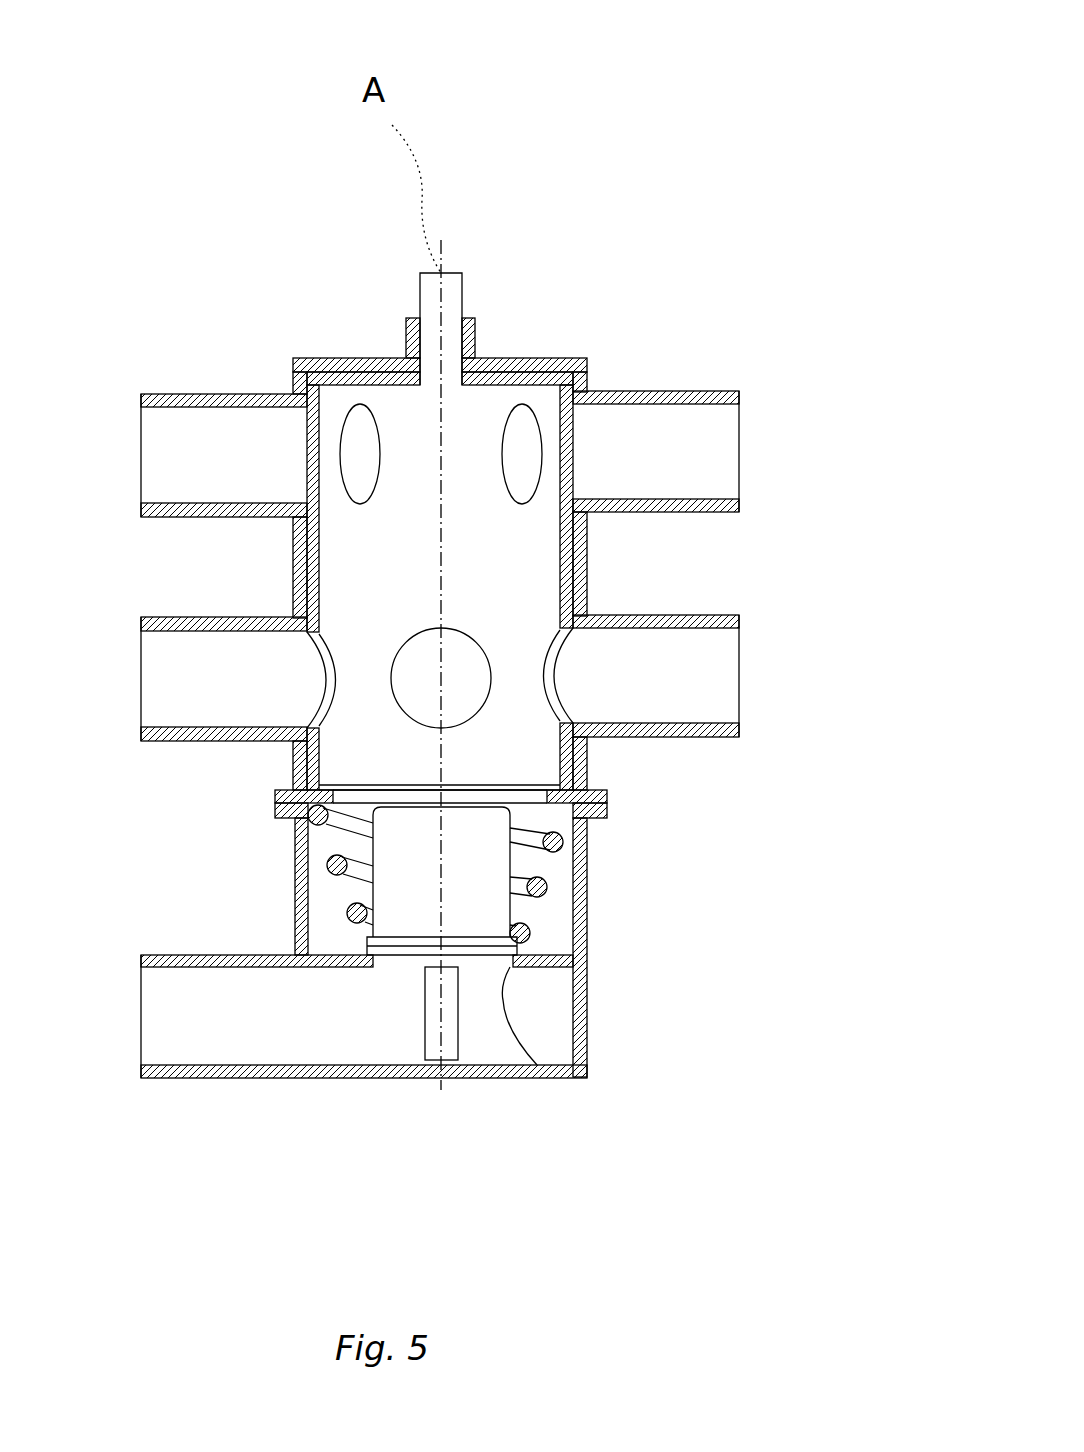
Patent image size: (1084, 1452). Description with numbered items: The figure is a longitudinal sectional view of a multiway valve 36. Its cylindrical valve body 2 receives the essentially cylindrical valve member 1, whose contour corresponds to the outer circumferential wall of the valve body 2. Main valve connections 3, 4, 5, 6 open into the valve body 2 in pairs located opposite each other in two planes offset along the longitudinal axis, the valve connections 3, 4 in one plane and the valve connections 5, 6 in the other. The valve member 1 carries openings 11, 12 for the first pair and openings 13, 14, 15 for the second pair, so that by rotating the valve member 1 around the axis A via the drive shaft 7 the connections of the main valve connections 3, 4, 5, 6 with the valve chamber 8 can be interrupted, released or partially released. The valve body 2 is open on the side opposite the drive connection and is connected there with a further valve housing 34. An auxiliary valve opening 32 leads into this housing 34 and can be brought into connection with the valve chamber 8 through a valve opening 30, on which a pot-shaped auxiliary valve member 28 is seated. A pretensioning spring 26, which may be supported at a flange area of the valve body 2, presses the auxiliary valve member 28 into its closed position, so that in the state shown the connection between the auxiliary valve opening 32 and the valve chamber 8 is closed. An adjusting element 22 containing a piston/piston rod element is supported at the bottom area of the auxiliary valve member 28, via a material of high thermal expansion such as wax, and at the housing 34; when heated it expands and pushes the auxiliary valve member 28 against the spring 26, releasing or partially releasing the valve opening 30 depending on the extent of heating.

The valve member 1 is at (473, 412).
The valve body 2 is at (322, 353).
The valve connection 3 is at (191, 399).
The valve connection 4 is at (688, 392).
The valve connection 5 is at (184, 745).
The valve connection 6 is at (707, 737).
The drive shaft 7 is at (455, 290).
The valve chamber 8 is at (512, 581).
The opening 11 is at (350, 458).
The opening 12 is at (525, 458).
The opening 13 is at (320, 681).
The opening 14 is at (560, 683).
The opening 15 is at (462, 667).
The adjusting element 22 is at (413, 1008).
The pretensioning spring 26 is at (590, 843).
The auxiliary valve member 28 is at (400, 898).
The valve opening 30 is at (547, 1078).
The auxiliary valve opening 32 is at (327, 1037).
The valve housing 34 is at (590, 990).
The multiway valve 36 is at (633, 113).